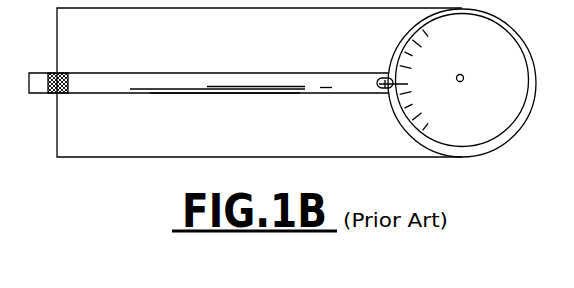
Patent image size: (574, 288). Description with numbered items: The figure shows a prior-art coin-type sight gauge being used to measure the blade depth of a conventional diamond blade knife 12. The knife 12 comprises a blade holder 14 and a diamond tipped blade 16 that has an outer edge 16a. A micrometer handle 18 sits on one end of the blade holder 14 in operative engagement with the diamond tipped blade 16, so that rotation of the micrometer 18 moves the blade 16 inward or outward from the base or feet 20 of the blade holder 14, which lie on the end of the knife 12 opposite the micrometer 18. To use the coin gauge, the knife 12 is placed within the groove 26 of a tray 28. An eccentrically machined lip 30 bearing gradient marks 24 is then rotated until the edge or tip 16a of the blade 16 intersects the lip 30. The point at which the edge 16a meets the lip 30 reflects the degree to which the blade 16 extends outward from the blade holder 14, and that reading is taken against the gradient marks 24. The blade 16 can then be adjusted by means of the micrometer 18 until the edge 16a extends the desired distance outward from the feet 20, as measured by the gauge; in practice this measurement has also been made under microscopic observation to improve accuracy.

The diamond blade knife 12 is at (215, 100).
The blade holder 14 is at (241, 72).
The diamond tipped blade 16 is at (390, 76).
The outer edge 16a is at (395, 76).
The micrometer handle 18 is at (61, 73).
The feet 20 is at (407, 94).
The gradient marks 24 is at (406, 64).
The groove 26 is at (155, 73).
The tray 28 is at (308, 146).
The eccentrically machined lip 30 is at (473, 147).